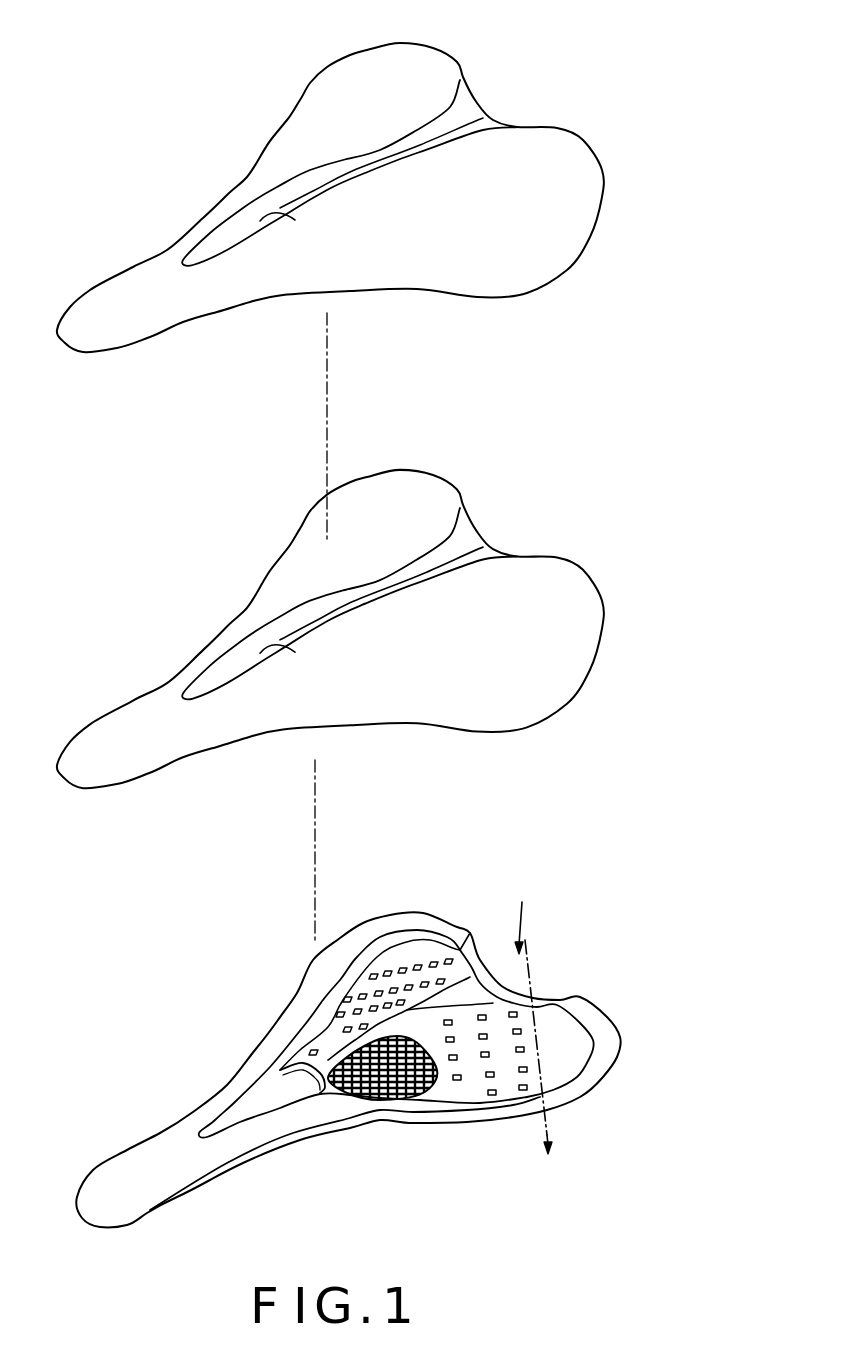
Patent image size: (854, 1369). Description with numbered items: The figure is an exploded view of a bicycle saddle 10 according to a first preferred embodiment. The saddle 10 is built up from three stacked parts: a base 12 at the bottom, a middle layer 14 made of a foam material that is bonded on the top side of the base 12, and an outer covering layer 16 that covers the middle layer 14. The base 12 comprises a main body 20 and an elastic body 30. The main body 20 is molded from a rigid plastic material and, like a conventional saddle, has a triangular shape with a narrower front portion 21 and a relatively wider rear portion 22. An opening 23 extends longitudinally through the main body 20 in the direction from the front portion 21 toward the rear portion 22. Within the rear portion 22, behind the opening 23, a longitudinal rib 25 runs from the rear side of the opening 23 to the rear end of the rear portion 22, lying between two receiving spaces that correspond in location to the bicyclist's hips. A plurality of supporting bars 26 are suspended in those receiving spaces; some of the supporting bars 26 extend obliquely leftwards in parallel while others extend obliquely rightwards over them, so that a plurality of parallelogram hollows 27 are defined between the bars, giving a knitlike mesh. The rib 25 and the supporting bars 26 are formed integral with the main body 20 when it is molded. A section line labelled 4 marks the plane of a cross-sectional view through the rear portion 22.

The bicycle saddle 10 is at (733, 303).
The base 12 is at (583, 917).
The middle layer 14 is at (614, 637).
The outer covering layer 16 is at (590, 270).
The main body 20 is at (349, 1137).
The front portion 21 is at (128, 1150).
The rear portion 22 is at (423, 915).
The opening 23 is at (263, 1093).
The longitudinal rib 25 is at (343, 1060).
The supporting bars 26 is at (413, 1100).
The parallelogram hollows 27 is at (390, 1100).
The elastic body 30 is at (577, 1047).
The section line 4- 4 is at (547, 1019).